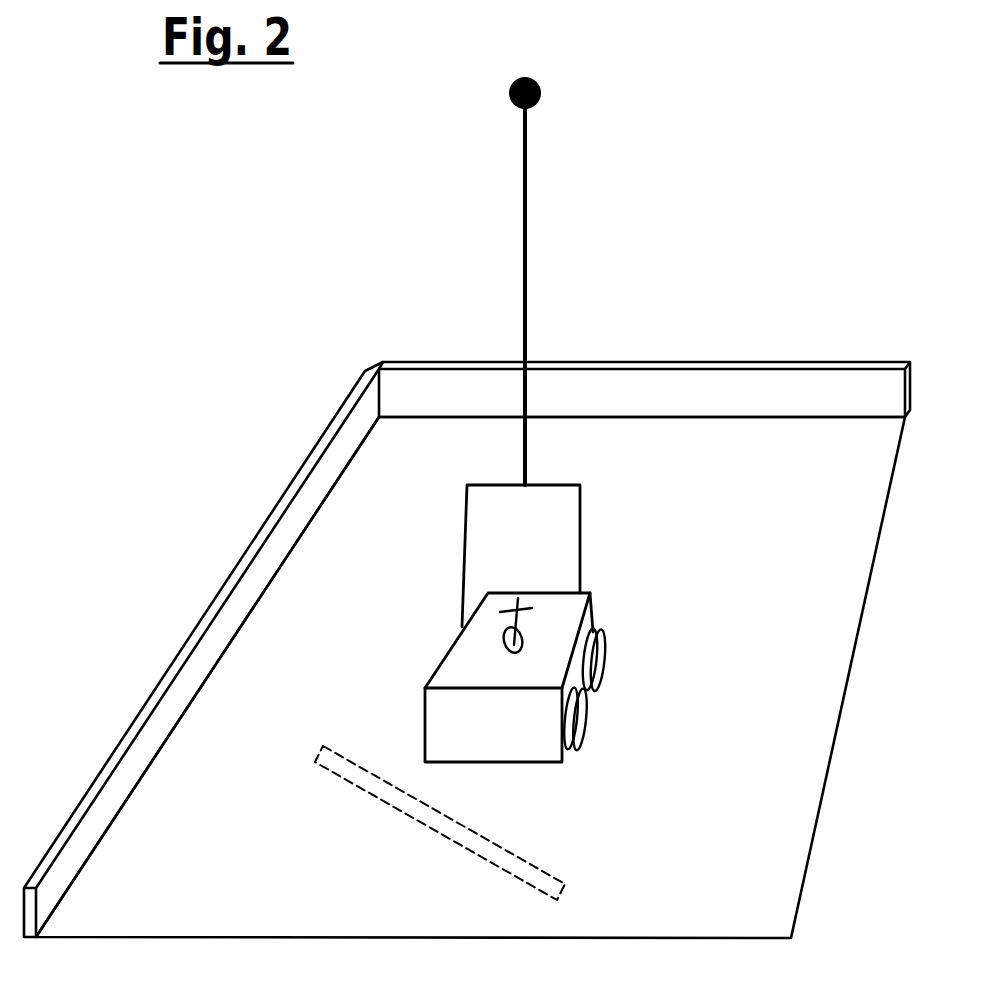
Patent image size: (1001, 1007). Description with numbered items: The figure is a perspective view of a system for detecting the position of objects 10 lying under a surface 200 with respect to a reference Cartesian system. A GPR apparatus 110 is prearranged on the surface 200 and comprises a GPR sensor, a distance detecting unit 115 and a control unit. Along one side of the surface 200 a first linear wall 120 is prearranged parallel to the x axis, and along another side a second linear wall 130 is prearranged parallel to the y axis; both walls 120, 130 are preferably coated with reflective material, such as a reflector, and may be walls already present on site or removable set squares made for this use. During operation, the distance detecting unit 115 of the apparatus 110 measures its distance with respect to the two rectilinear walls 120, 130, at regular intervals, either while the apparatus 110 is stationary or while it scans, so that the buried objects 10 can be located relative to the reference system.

The objects 10 is at (522, 867).
The GPR apparatus 110 is at (681, 641).
The distance detecting unit 115 is at (492, 632).
The first linear wall 120 is at (780, 361).
The second linear wall 130 is at (320, 440).
The surface 200 is at (467, 601).